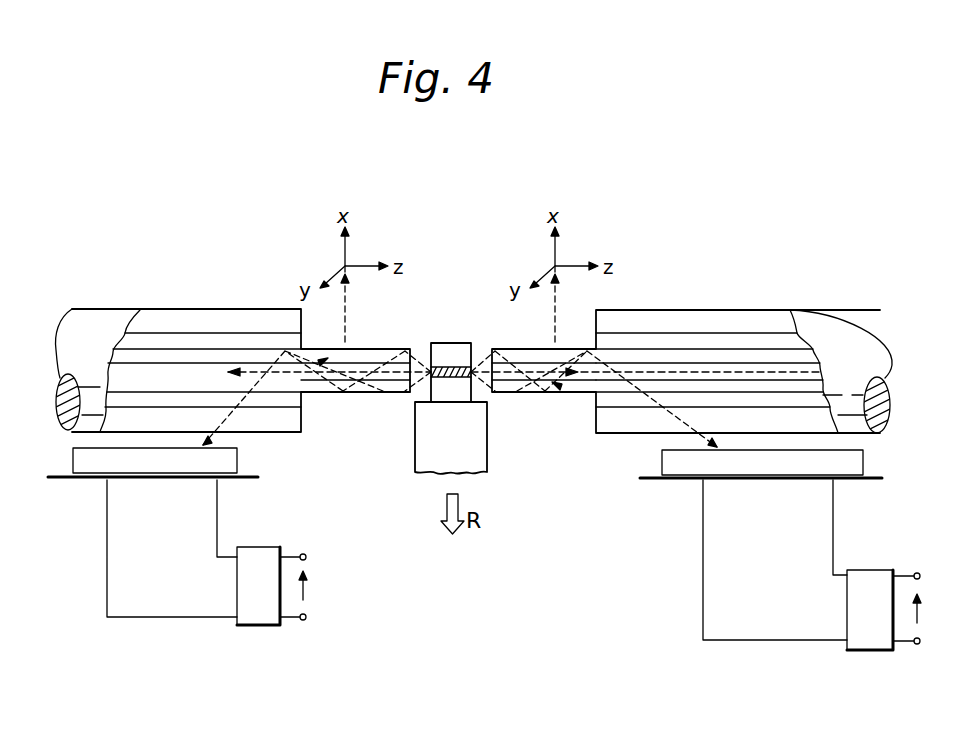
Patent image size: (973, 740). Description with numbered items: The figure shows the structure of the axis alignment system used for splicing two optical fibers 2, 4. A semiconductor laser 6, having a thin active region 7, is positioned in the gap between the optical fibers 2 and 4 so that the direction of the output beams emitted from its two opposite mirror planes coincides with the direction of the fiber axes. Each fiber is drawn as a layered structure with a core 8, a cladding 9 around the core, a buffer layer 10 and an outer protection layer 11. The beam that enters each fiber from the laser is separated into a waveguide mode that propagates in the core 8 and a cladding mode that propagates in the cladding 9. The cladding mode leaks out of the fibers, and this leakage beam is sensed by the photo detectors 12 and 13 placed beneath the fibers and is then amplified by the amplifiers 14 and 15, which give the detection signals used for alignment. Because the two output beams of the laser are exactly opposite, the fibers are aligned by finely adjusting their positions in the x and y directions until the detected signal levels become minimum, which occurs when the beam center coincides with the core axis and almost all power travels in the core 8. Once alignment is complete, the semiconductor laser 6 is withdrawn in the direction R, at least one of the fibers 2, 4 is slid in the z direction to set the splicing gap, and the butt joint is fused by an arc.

The optical fiber 2 is at (108, 308).
The optical fiber 4 is at (852, 315).
The semiconductor laser 6 is at (454, 347).
The active region 7 is at (447, 382).
The core 8 is at (647, 370).
The cladding 9 is at (672, 355).
The buffer layer 10 is at (712, 338).
The protection layer 11 is at (758, 318).
The photo detector 12 is at (237, 455).
The photo detector 13 is at (662, 456).
The amplifier 14 is at (265, 621).
The amplifier 15 is at (865, 647).